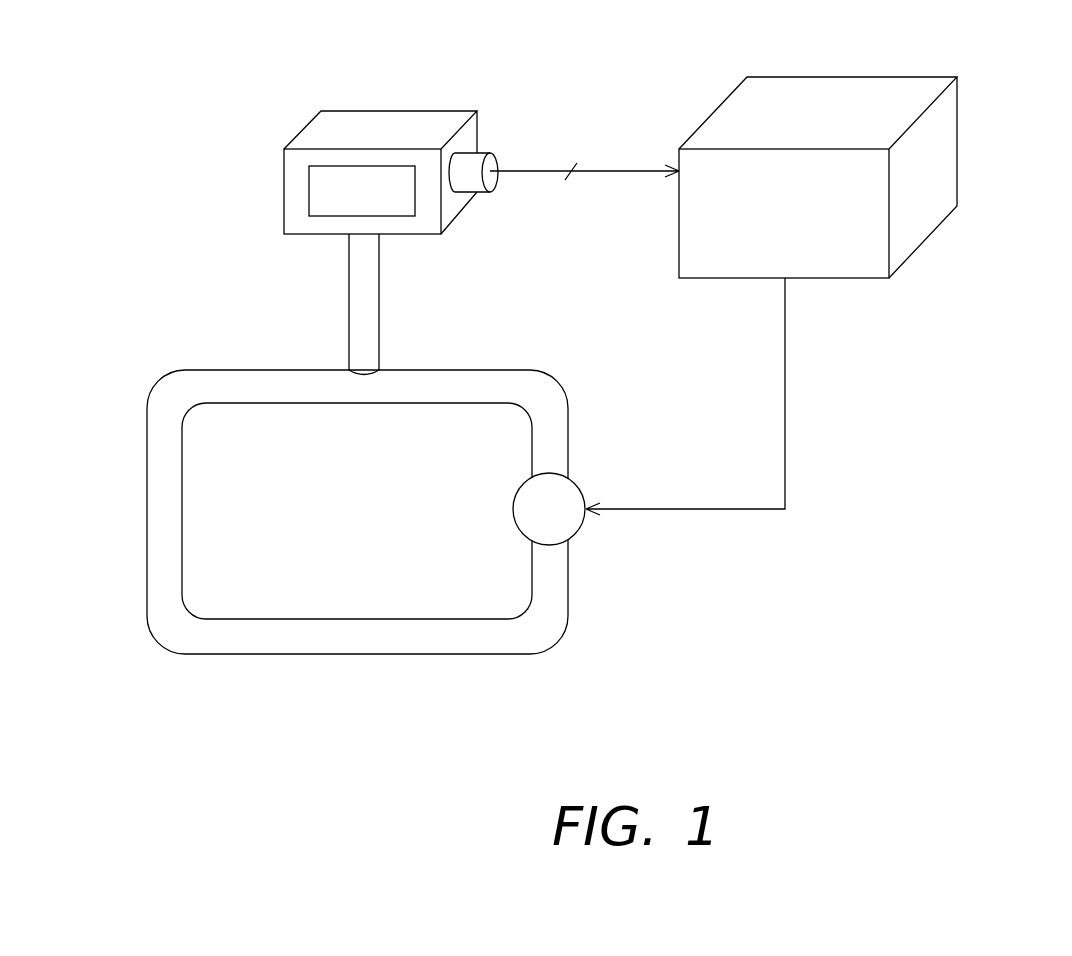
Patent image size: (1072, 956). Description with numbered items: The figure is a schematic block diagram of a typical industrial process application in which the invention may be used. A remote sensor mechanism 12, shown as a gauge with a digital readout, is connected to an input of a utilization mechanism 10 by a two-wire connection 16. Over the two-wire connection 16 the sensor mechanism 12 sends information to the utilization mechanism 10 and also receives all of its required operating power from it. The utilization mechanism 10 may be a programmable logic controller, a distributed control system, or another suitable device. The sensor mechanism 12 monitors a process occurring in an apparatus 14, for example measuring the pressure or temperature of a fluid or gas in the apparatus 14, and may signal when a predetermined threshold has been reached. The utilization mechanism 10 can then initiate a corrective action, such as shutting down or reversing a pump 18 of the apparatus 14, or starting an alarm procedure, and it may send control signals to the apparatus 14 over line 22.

The utilization mechanism 10 is at (957, 87).
The sensor mechanism 12 is at (321, 111).
The apparatus 14 is at (348, 655).
The two-wire connection 16 is at (637, 170).
The pump 18 is at (568, 482).
The line 22 is at (678, 512).